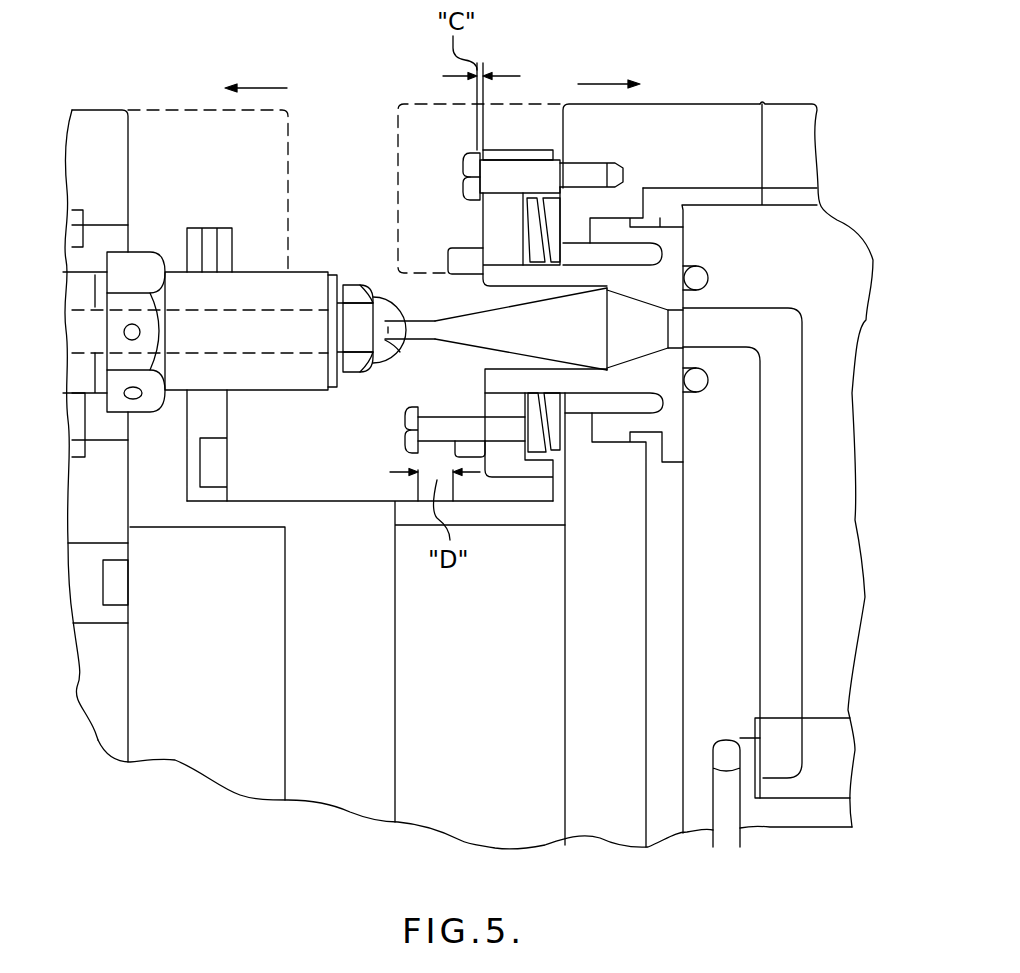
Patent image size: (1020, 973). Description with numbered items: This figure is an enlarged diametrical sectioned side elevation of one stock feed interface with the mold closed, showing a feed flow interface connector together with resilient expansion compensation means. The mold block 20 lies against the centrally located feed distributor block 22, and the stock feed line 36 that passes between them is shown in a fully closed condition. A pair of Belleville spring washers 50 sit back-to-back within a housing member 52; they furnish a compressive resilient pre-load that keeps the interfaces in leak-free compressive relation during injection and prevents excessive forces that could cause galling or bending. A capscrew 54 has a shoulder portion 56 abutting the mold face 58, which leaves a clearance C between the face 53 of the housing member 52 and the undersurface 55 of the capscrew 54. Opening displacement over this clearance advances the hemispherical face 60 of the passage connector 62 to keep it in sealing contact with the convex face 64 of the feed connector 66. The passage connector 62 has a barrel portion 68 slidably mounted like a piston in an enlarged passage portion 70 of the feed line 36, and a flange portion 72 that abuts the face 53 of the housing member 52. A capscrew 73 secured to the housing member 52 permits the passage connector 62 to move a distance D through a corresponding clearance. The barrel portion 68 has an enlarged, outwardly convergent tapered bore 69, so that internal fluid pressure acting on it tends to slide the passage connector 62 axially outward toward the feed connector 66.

The mold block 20 is at (680, 83).
The feed distributor block 22 is at (143, 90).
The stock feed line 36 is at (237, 305).
The Belleville spring washers 50 is at (553, 213).
The housing member 52 is at (497, 150).
The face of housing member 53 is at (483, 222).
The capscrew 54 is at (463, 178).
The undersurface of capscrew 55 is at (472, 205).
The shoulder portion 56 is at (563, 160).
The mold face 58 is at (560, 130).
The hemispherical face 60 is at (390, 353).
The passage connector 62 is at (390, 278).
The convex face 64 is at (402, 318).
The feed connector 66 is at (353, 368).
The barrel portion 68 is at (553, 293).
The tapered bore 69 is at (490, 313).
The enlarged passage portion 70 is at (594, 284).
The flange portion 72 is at (470, 261).
The capscrew 73 is at (397, 433).